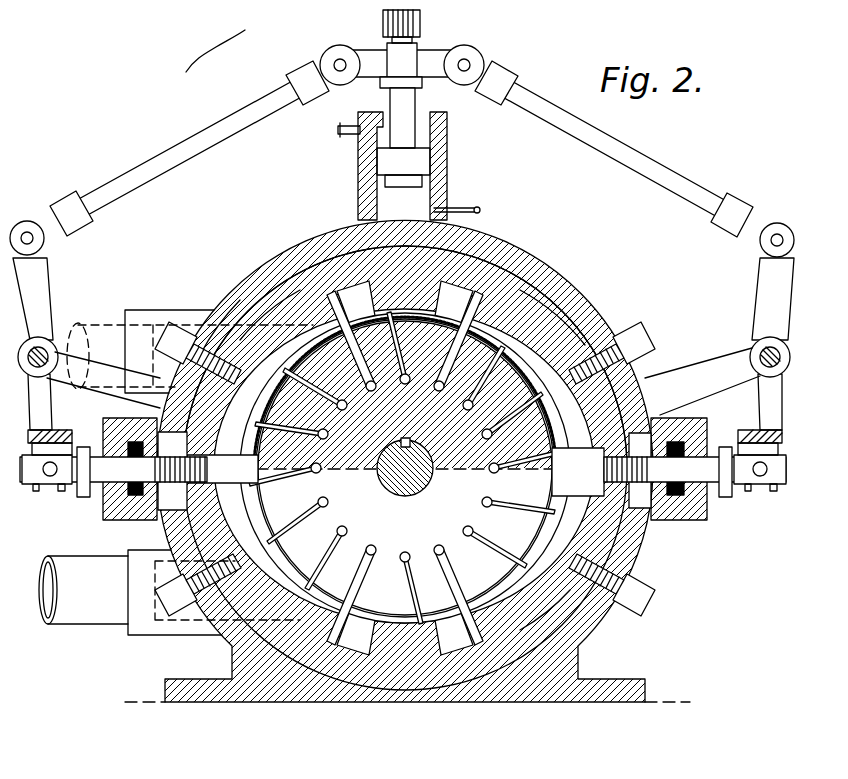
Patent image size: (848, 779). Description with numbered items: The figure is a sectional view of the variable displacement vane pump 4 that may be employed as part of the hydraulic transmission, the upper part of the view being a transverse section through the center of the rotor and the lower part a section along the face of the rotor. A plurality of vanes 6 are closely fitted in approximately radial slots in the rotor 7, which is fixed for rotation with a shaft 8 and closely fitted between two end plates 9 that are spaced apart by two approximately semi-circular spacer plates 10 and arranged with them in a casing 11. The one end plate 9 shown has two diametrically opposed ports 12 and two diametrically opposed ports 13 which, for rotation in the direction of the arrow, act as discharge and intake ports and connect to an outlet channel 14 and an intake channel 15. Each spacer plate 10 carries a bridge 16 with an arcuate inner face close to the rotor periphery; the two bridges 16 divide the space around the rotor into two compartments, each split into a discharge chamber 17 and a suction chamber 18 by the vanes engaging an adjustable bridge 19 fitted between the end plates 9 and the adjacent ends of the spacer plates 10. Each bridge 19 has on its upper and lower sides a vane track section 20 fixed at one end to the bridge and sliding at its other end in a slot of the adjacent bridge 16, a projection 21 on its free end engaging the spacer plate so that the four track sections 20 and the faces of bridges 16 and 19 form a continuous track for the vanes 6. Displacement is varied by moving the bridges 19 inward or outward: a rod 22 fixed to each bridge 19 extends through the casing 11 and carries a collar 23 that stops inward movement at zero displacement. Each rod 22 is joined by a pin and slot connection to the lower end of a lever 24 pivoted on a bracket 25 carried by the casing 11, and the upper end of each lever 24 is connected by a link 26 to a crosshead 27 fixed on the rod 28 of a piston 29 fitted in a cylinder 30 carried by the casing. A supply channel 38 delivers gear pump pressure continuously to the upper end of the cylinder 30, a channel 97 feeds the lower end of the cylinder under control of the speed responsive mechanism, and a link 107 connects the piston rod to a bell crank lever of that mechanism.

The pump 4 is at (215, 50).
The vanes 6 is at (397, 598).
The rotor 7 is at (436, 529).
The shaft 8 is at (405, 467).
The end plates 9 is at (548, 310).
The spacer plates 10 is at (322, 288).
The casing 11 is at (252, 290).
The discharge ports 12 is at (545, 388).
The intake ports 13 is at (268, 391).
The outlet channel 14 is at (97, 612).
The intake channel 15 is at (94, 336).
The bridge 16 is at (410, 456).
The discharge chamber 17 is at (548, 295).
The suction chamber 18 is at (292, 305).
The adjustable bridge 19 is at (232, 491).
The vane track section 20 is at (262, 335).
The projection 21 is at (347, 285).
The rod 22 is at (28, 490).
The collar 23 is at (83, 497).
The lever 24 is at (762, 287).
The bracket 25 is at (711, 368).
The link 26 is at (228, 127).
The crosshead 27 is at (430, 62).
The rod 28 is at (443, 96).
The piston 29 is at (440, 160).
The cylinder 30 is at (388, 196).
The supply channel 38 is at (338, 130).
The channel 97 is at (470, 213).
The link 107 is at (383, 24).